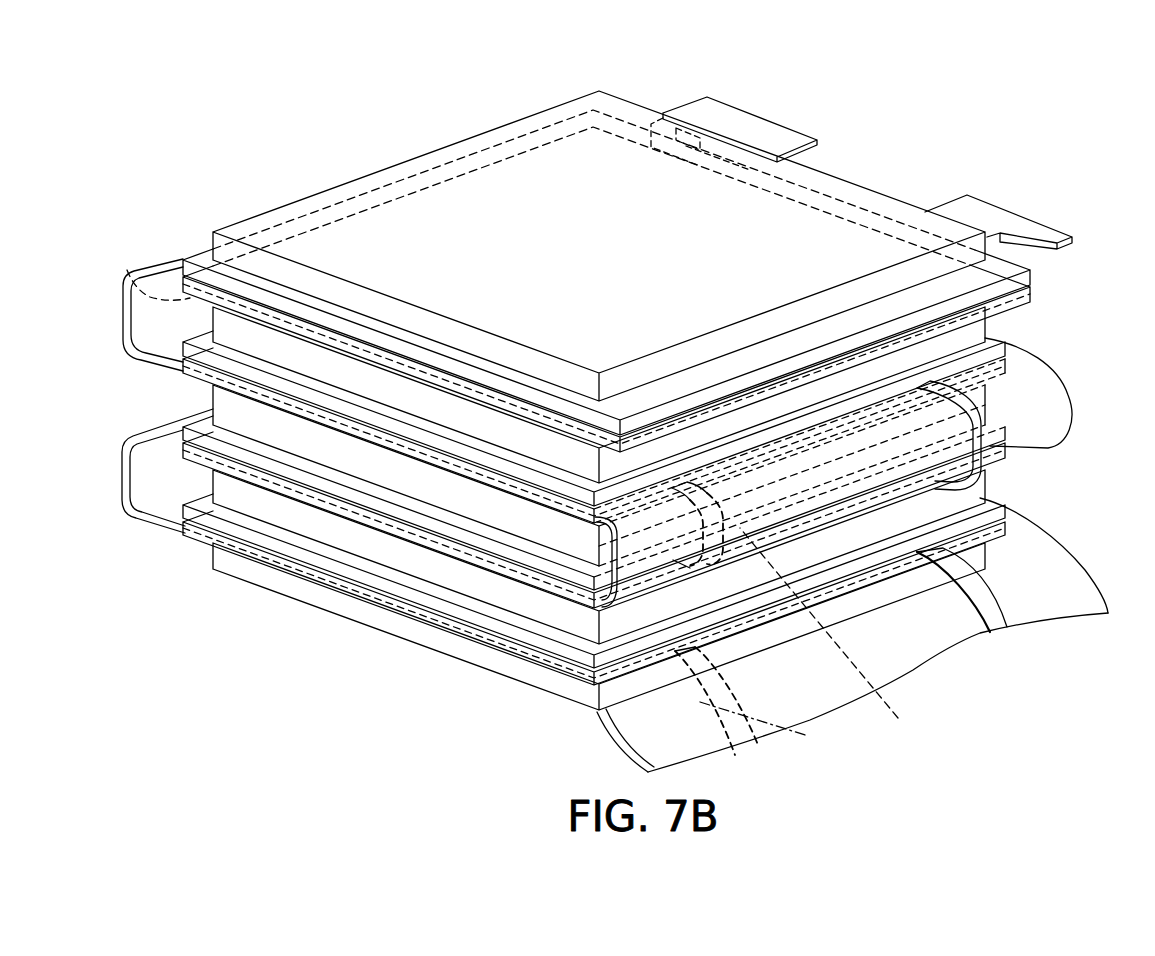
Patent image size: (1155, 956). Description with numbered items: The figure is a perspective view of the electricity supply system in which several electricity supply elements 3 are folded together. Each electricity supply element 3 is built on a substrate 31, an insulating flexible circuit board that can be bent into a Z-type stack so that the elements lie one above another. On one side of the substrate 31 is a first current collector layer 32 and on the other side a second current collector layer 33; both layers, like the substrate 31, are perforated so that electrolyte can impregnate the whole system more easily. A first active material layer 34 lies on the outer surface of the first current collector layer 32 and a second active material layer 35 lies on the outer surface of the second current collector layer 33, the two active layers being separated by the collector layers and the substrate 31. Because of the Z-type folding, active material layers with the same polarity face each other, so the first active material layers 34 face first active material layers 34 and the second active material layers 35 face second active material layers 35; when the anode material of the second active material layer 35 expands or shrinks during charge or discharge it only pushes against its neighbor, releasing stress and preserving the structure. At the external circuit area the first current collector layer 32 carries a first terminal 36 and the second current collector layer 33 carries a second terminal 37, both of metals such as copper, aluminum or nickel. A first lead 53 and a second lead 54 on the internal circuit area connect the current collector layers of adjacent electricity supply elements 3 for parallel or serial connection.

The electricity supply element 3 is at (366, 159).
The substrate 31 is at (1000, 297).
The first current collector layer 32 is at (200, 258).
The second current collector layer 33 is at (127, 270).
The first active material layer 34 is at (213, 383).
The second active material layer 35 is at (213, 308).
The first terminal 36 is at (993, 220).
The second terminal 37 is at (722, 132).
The first lead 53 is at (982, 403).
The second lead 54 is at (800, 733).